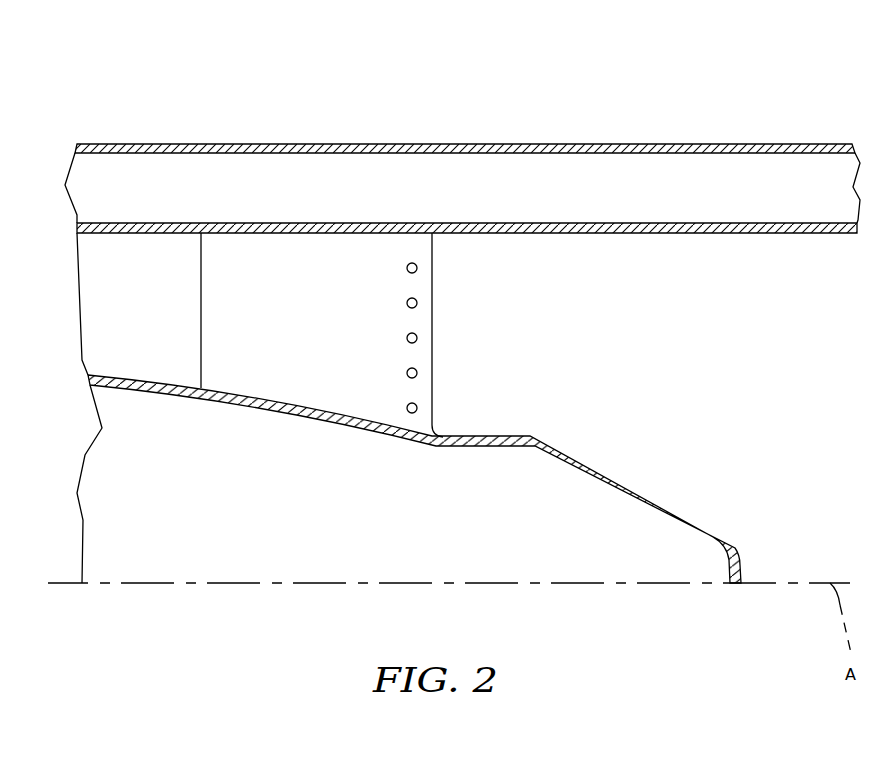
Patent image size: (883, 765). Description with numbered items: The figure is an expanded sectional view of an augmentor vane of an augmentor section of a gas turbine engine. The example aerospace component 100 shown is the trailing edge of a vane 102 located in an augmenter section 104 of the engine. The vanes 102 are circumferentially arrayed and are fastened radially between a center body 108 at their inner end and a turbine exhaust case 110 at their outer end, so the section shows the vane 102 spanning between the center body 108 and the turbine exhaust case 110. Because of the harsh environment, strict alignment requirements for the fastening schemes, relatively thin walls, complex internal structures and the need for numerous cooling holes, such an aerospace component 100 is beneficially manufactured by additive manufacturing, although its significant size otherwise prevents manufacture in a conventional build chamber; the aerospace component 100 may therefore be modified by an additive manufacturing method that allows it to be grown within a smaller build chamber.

The aerospace component 100 is at (472, 413).
The vane 102 is at (310, 329).
The augmenter section 104 is at (462, 128).
The center body 108 is at (292, 477).
The turbine exhaust case 110 is at (556, 144).